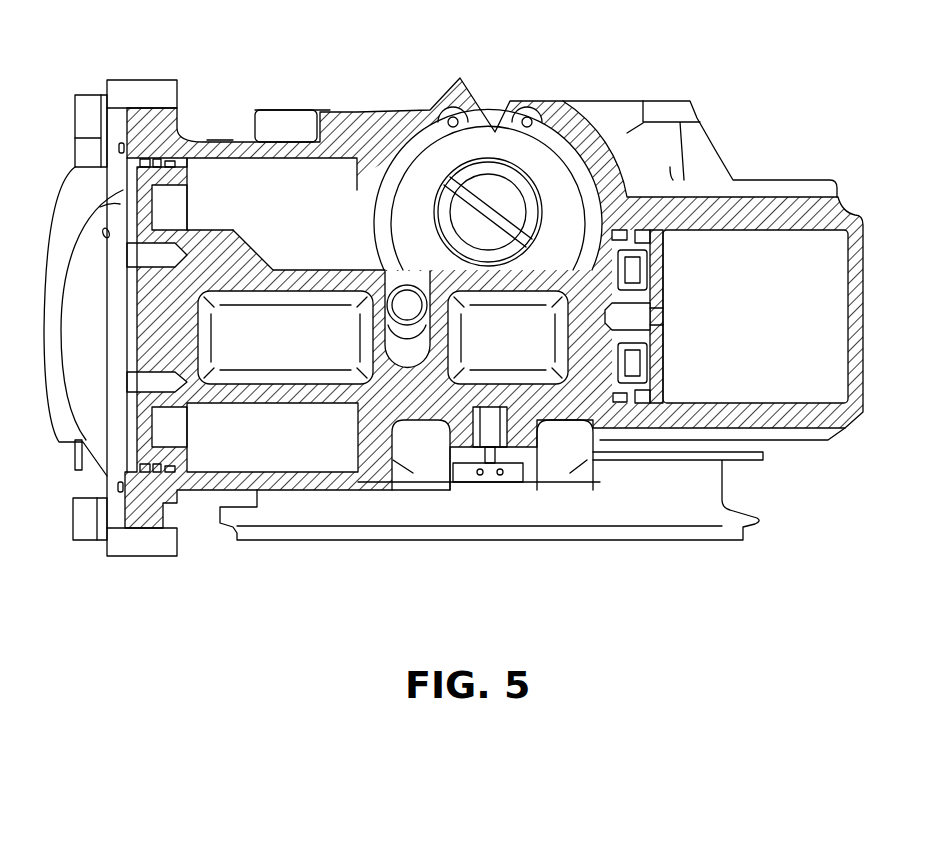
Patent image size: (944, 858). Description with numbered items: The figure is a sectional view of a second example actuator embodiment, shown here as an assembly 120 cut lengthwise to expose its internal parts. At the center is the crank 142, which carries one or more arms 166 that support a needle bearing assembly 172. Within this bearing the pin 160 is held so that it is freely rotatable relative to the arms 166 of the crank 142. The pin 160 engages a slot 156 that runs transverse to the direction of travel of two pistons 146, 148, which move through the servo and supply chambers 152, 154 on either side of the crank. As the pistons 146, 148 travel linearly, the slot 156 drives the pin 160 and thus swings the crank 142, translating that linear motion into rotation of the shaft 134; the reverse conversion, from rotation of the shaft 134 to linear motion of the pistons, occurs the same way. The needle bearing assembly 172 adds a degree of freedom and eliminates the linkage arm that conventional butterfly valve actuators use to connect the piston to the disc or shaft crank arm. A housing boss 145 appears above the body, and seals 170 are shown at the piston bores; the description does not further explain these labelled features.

The pump assembly 120 is at (627, 570).
The shaft 134 is at (468, 103).
The crank 142 is at (402, 272).
The boss 145 is at (623, 224).
The piston 146 is at (122, 345).
The piston 148 is at (657, 378).
The servo chamber 152 is at (287, 448).
The supply chamber 154 is at (767, 348).
The slot 156 is at (418, 330).
The pin 160 is at (421, 314).
The arm 166 is at (522, 258).
The pocket / seal 170 is at (287, 348).
The needle bearing assembly 172 is at (390, 270).